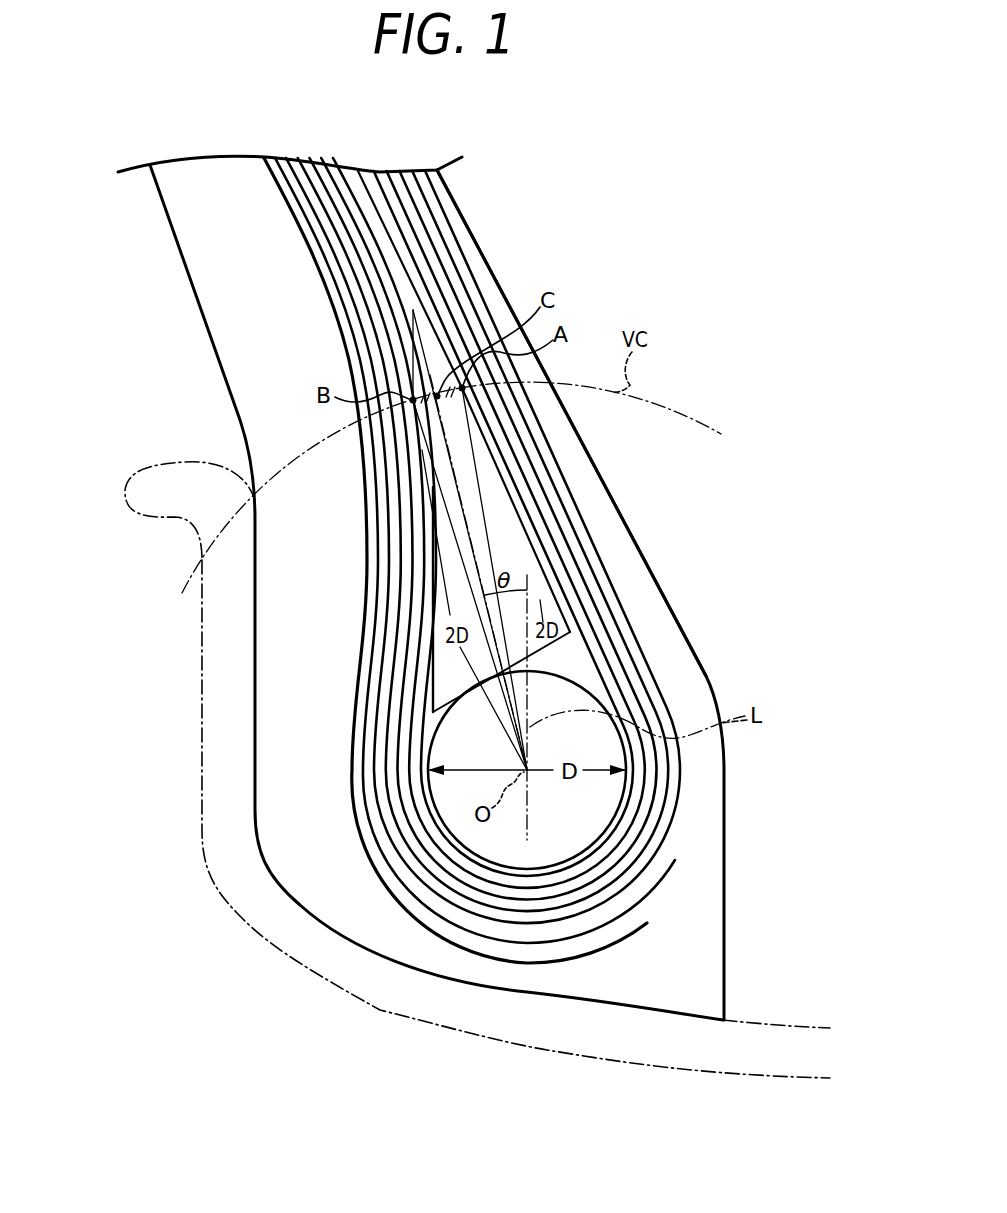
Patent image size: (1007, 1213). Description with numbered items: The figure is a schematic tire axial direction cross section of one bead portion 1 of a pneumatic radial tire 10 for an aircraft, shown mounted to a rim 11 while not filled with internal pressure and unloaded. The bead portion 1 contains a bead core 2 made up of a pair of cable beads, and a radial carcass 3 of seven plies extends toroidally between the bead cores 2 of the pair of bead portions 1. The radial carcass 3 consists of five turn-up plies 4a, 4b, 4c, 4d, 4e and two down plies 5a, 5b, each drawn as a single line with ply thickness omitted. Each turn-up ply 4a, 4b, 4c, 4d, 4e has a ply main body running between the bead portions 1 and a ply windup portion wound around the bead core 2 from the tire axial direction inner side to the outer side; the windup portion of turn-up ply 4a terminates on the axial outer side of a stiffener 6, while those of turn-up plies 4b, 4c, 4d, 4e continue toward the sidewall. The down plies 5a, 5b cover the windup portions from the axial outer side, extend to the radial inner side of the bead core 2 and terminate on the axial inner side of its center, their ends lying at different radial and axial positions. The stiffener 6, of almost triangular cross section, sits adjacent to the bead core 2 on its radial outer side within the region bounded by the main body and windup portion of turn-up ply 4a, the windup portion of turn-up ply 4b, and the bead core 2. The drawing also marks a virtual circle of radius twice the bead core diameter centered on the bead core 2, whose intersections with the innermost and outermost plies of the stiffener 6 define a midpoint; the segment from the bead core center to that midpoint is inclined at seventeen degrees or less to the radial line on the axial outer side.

The bead portion 1 is at (680, 512).
The bead core 2 is at (560, 677).
The radial carcass 3 is at (295, 265).
The turn-up ply 4a is at (384, 227).
The turn-up ply 4b is at (406, 242).
The turn-up ply 4c is at (427, 260).
The turn-up ply 4d is at (447, 277).
The turn-up ply 4e is at (469, 297).
The down ply 5a is at (340, 302).
The down ply 5b is at (337, 327).
The stiffener 6 is at (560, 500).
The pneumatic radial tire 10 is at (775, 328).
The rim 11 is at (147, 486).